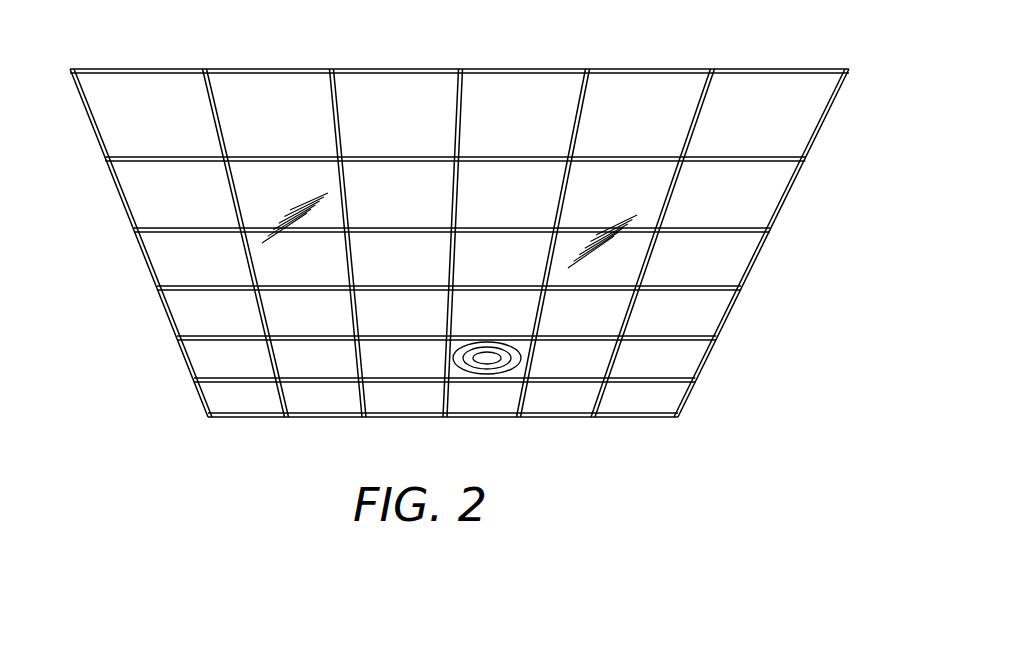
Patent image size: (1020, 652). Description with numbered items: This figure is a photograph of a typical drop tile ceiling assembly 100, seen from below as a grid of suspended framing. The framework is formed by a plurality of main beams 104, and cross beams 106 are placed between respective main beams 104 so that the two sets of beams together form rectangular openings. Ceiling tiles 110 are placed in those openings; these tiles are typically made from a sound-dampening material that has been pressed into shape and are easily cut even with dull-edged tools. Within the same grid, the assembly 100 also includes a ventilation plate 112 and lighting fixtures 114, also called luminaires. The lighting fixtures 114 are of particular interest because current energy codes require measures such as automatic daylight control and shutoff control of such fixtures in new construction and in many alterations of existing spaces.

The drop tile ceiling assembly 100 is at (462, 236).
The main beams 104 is at (584, 70).
The cross beams 106 is at (400, 157).
The ceiling tiles 110 is at (743, 183).
The ventilation plate 112 is at (486, 374).
The lighting fixtures 114 is at (257, 233).